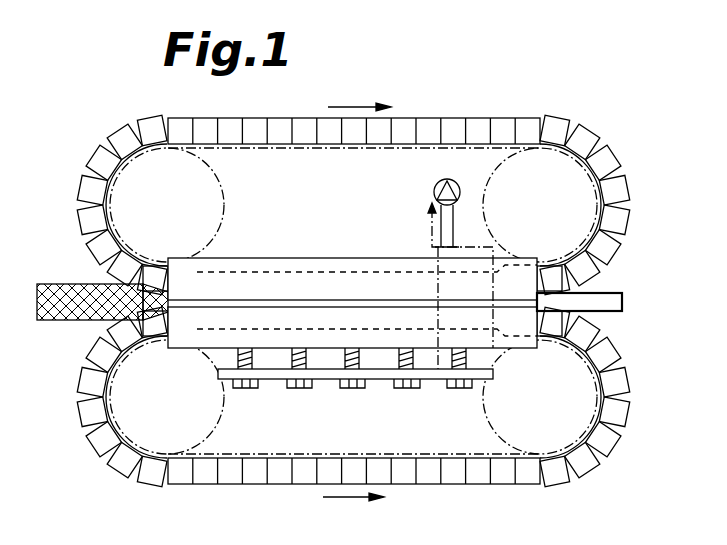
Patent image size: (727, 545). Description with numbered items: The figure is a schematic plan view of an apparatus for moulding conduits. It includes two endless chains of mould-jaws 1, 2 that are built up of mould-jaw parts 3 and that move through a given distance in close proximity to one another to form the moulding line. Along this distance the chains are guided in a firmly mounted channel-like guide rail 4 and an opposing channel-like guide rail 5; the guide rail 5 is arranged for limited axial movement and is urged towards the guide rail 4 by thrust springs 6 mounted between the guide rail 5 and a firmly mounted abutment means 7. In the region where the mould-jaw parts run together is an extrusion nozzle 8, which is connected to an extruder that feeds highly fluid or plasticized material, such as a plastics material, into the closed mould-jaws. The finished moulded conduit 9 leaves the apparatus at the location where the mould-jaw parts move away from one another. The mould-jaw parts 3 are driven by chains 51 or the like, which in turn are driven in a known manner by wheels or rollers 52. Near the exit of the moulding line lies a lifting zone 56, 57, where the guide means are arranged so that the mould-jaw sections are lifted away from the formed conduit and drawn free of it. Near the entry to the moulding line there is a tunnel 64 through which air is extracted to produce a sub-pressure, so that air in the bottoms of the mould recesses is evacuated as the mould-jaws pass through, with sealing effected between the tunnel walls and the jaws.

The endless chain of mould-jaws 1 is at (238, 126).
The endless chain of mould-jaws 2 is at (230, 481).
The mould-jaw parts 3 is at (92, 256).
The channel-like guide rail 4 is at (343, 262).
The channel-like guide rail 5 is at (533, 345).
The thrust springs 6 is at (371, 360).
The abutment means 7 is at (433, 382).
The extrusion nozzle 8 is at (608, 292).
The conduit 9 is at (60, 284).
The chains 51 is at (286, 150).
The wheels or rollers 52 is at (503, 166).
The lifting zone 56 is at (197, 270).
The lifting zone 57 is at (200, 330).
The tunnel 64 is at (429, 247).